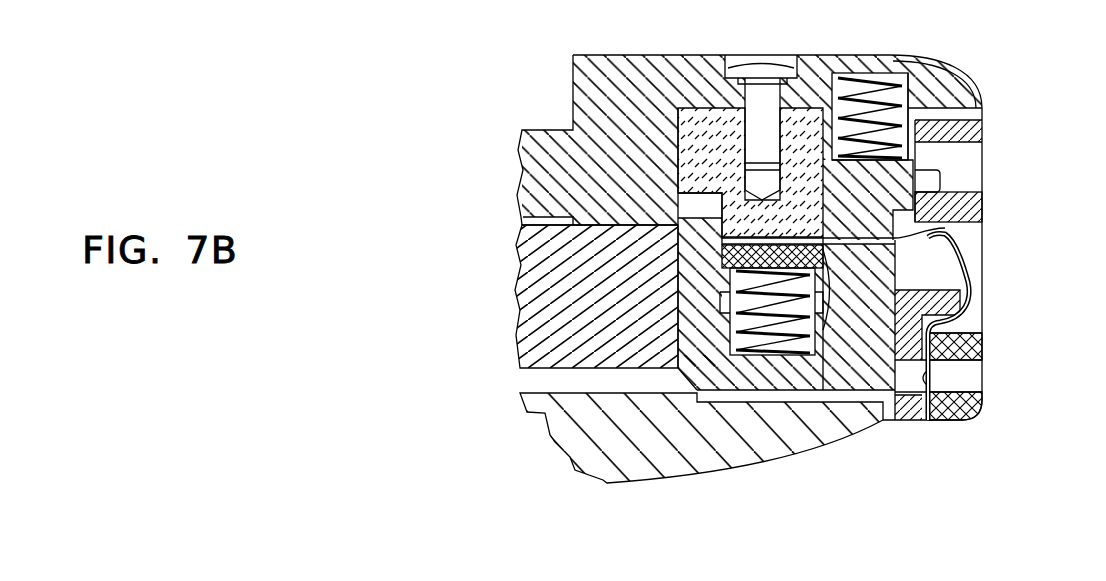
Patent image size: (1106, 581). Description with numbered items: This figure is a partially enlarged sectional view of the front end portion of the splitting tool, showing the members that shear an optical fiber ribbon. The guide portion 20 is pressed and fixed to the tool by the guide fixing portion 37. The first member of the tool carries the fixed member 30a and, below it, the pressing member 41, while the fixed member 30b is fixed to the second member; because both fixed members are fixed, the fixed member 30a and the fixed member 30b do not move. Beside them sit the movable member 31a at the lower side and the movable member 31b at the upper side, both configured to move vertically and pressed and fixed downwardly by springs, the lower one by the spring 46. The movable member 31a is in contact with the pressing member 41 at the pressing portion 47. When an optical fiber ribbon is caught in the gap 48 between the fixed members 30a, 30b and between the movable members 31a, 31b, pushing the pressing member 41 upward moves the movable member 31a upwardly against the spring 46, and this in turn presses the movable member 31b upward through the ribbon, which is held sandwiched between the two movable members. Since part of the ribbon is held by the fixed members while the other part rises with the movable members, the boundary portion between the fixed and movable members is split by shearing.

The guide portion 20 is at (945, 228).
The fixed member 30a is at (826, 320).
The fixed member 30b is at (800, 130).
The movable member 31a is at (860, 362).
The movable member 31b is at (915, 164).
The guide fixing portion 37 is at (970, 270).
The pressing member 41 is at (582, 440).
The spring 46 is at (748, 340).
The pressing portion 47 is at (790, 350).
The gap 48 is at (940, 219).